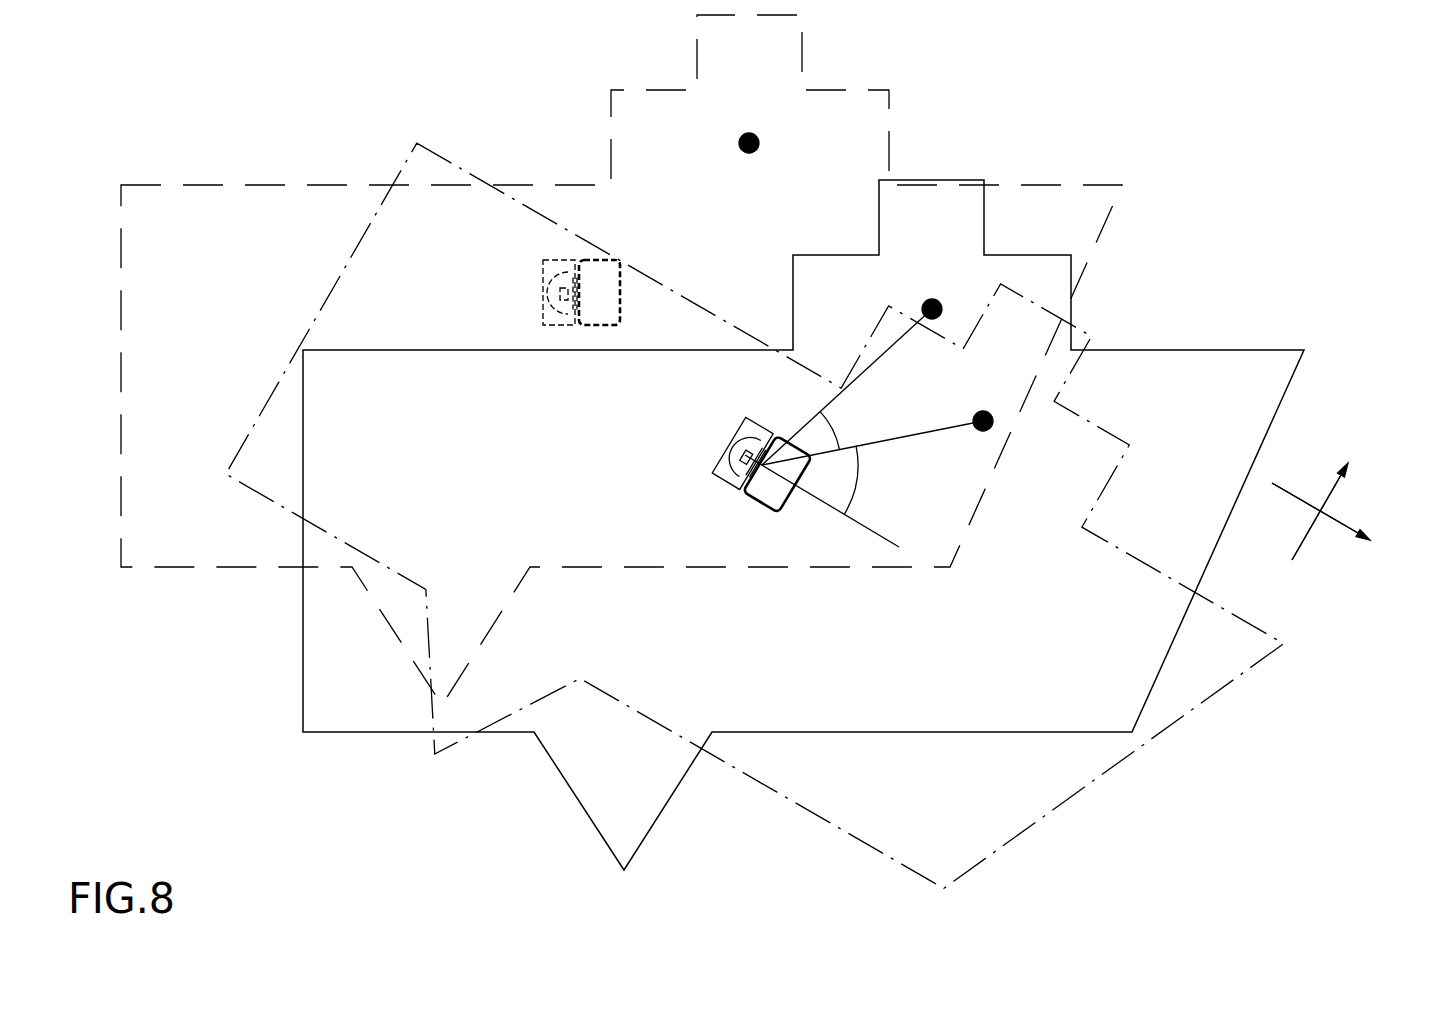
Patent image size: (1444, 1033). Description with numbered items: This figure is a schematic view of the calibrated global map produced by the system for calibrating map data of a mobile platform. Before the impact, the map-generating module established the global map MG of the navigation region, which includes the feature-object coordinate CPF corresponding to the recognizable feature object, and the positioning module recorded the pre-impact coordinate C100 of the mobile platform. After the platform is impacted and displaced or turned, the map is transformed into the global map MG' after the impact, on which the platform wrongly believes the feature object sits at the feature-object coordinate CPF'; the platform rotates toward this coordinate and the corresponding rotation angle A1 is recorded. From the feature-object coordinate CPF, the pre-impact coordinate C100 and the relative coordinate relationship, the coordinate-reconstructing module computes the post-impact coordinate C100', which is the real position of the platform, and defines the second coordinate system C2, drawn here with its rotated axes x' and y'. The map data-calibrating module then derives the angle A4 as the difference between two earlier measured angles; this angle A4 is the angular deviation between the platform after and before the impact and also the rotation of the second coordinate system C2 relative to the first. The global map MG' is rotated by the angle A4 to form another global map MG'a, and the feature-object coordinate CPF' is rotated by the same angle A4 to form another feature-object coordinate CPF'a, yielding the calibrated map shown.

The global map MG is at (621, 360).
The global map after the impact MG' is at (763, 516).
The another global map MG'a is at (803, 525).
The feature-object coordinate CPF is at (747, 110).
The another feature-object coordinate CPF'a is at (862, 348).
The feature-object coordinate on the global map after the impact CPF' is at (911, 492).
The pre-impact coordinate C100 is at (531, 292).
The post-impact coordinate C100' is at (751, 482).
The angle A4 is at (842, 427).
The rotation angle A1 is at (871, 480).
The x' axis x' is at (1333, 517).
The y' axis y' is at (1326, 496).
The second coordinate system C2 is at (1330, 564).